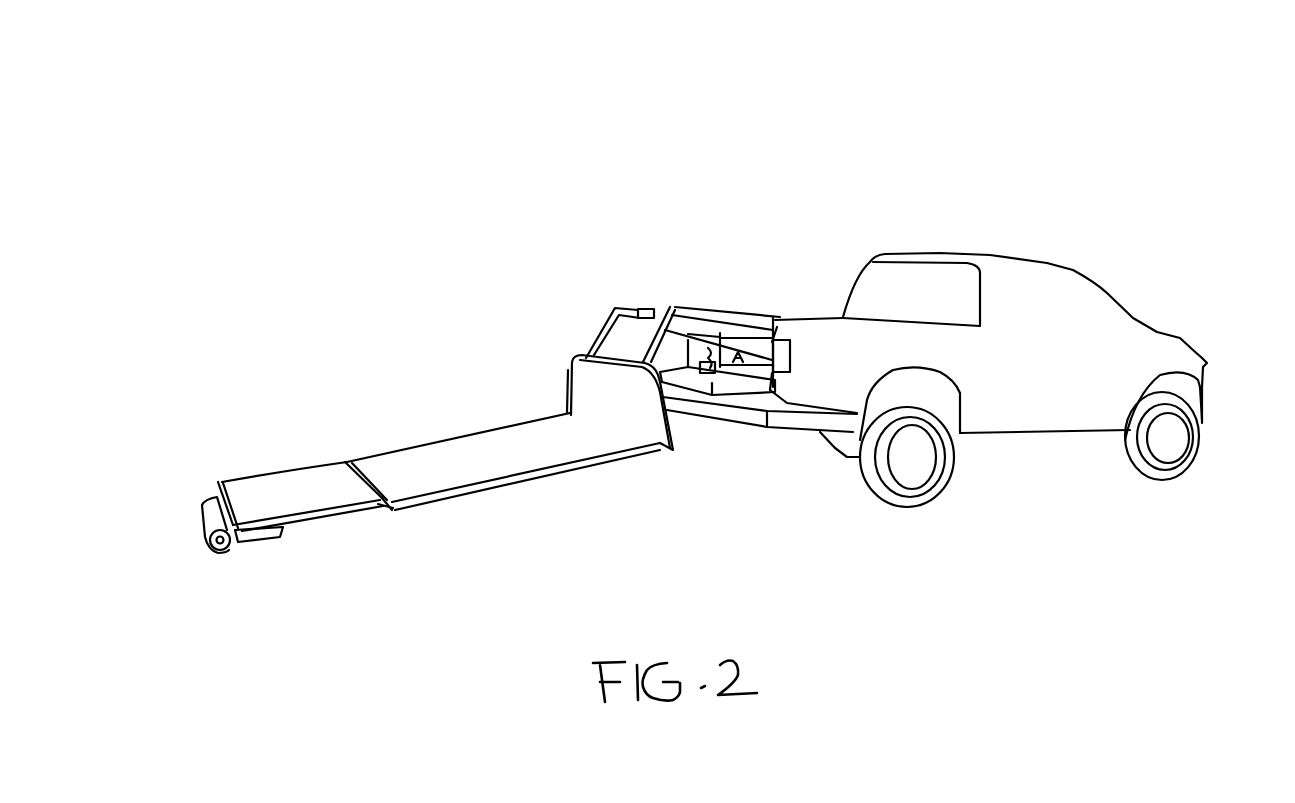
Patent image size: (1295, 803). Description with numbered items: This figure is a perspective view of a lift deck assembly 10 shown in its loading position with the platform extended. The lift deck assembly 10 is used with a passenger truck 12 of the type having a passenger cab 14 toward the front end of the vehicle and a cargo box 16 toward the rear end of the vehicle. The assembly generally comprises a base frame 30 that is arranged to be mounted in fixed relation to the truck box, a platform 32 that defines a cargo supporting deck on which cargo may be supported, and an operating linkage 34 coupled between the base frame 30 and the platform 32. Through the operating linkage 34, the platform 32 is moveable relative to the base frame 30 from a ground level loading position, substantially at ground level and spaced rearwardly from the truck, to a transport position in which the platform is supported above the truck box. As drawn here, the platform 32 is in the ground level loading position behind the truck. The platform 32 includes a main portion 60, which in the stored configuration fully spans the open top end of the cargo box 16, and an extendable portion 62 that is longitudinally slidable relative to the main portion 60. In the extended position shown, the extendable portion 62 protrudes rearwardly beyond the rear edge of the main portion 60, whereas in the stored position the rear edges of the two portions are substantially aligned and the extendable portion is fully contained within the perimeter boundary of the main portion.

The lift deck assembly 10 is at (595, 120).
The passenger truck 12 is at (1228, 205).
The passenger cab 14 is at (1033, 212).
The cargo box 16 is at (1011, 368).
The base frame 30 is at (769, 265).
The platform 32 is at (357, 327).
The operating linkage 34 is at (575, 285).
The main portion 60 is at (697, 452).
The extendable portion 62 is at (326, 559).